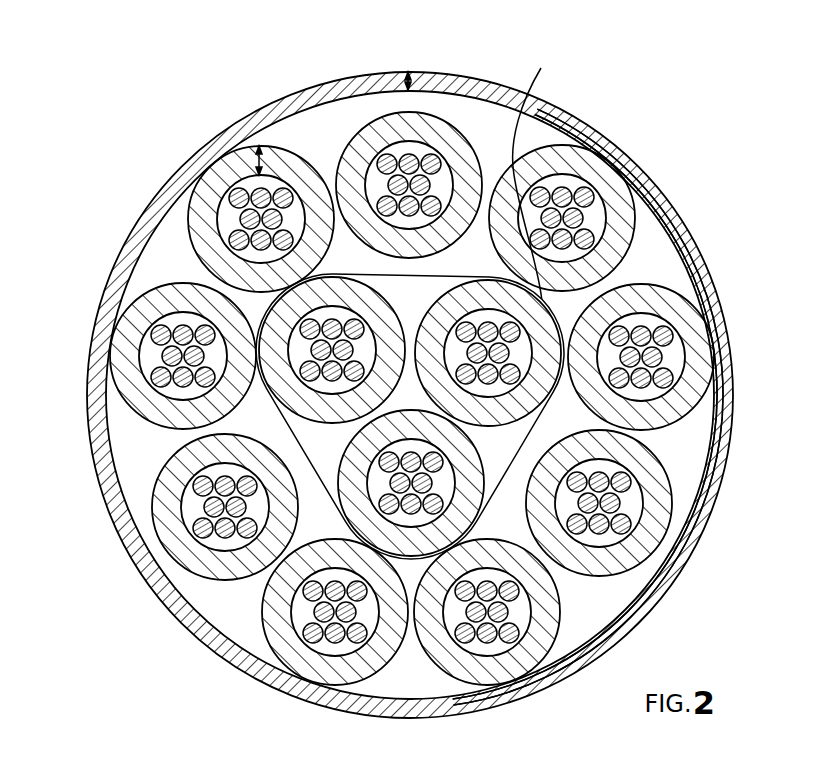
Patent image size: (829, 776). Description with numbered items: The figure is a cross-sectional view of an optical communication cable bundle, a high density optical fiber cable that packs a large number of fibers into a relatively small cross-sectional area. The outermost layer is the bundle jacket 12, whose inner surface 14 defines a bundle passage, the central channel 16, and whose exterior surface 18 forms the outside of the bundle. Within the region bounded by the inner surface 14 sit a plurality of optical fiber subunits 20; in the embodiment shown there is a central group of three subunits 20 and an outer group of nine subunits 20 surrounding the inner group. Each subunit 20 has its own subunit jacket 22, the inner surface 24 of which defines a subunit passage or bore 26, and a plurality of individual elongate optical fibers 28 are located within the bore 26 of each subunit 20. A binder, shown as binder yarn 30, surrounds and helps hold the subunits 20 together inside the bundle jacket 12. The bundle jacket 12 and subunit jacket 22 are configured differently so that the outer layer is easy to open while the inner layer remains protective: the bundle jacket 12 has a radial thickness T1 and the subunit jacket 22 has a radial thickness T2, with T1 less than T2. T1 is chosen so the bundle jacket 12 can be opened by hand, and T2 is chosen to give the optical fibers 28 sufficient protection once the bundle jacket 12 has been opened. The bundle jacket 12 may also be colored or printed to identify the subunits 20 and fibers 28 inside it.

The bundle jacket 12 is at (456, 395).
The inner surface 14 is at (692, 492).
The central channel 16 is at (721, 433).
The exterior surface 18 is at (742, 488).
The optical fiber subunit 20 is at (385, 388).
The subunit jacket 22 is at (601, 198).
The inner surface 24 is at (562, 189).
The bore 26 is at (627, 224).
The optical fibers 28 is at (536, 112).
The binder yarn 30 is at (640, 605).
The bundle jacket thickness T1 is at (403, 80).
The subunit jacket thickness T2 is at (256, 158).